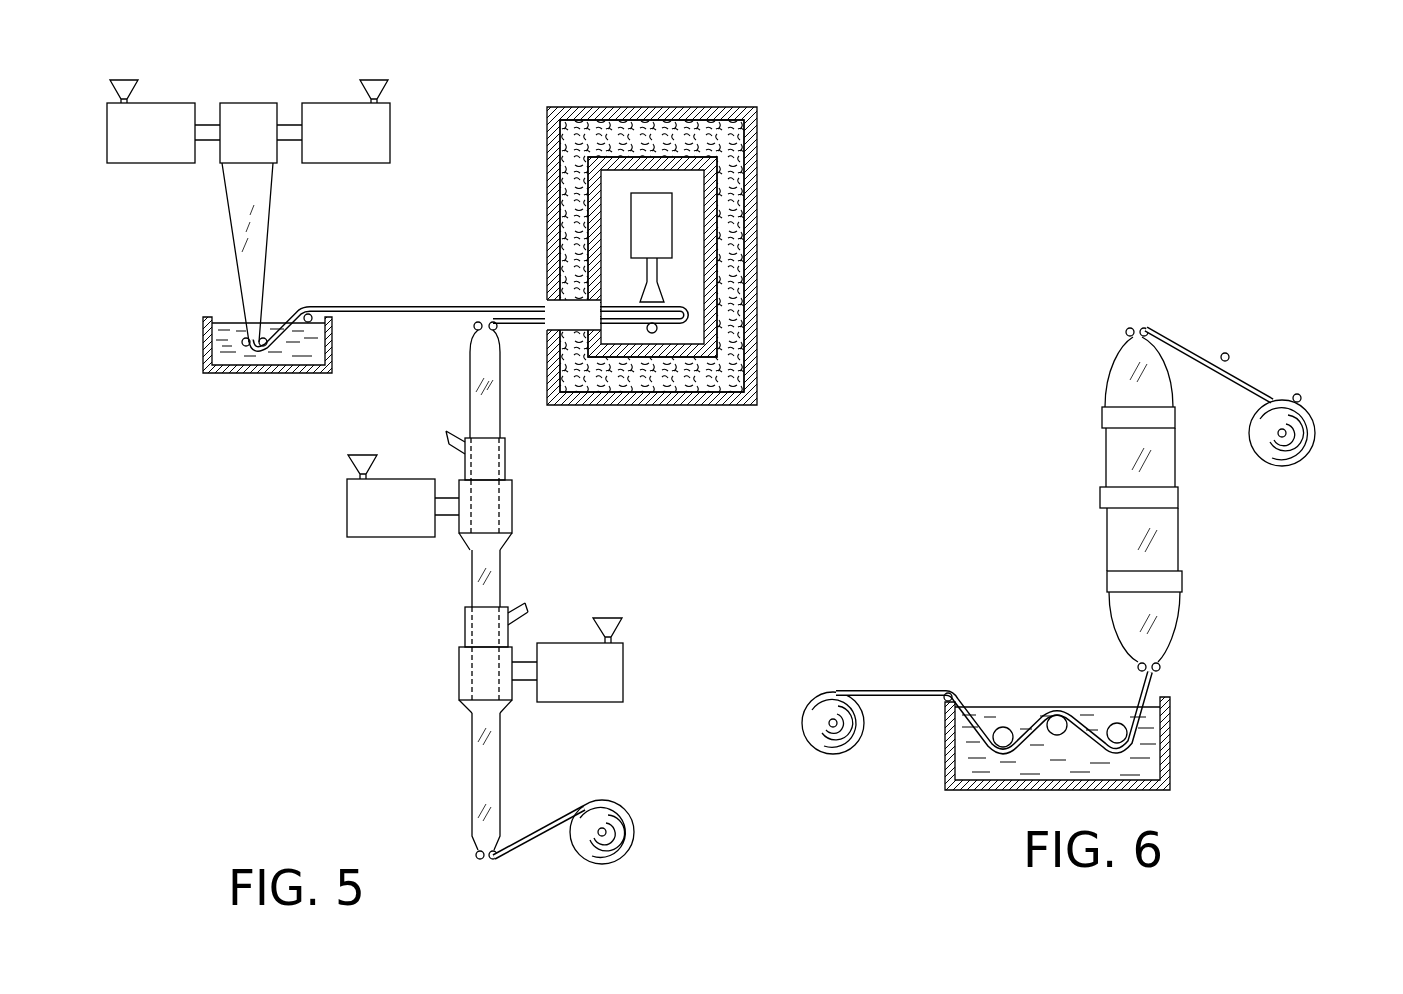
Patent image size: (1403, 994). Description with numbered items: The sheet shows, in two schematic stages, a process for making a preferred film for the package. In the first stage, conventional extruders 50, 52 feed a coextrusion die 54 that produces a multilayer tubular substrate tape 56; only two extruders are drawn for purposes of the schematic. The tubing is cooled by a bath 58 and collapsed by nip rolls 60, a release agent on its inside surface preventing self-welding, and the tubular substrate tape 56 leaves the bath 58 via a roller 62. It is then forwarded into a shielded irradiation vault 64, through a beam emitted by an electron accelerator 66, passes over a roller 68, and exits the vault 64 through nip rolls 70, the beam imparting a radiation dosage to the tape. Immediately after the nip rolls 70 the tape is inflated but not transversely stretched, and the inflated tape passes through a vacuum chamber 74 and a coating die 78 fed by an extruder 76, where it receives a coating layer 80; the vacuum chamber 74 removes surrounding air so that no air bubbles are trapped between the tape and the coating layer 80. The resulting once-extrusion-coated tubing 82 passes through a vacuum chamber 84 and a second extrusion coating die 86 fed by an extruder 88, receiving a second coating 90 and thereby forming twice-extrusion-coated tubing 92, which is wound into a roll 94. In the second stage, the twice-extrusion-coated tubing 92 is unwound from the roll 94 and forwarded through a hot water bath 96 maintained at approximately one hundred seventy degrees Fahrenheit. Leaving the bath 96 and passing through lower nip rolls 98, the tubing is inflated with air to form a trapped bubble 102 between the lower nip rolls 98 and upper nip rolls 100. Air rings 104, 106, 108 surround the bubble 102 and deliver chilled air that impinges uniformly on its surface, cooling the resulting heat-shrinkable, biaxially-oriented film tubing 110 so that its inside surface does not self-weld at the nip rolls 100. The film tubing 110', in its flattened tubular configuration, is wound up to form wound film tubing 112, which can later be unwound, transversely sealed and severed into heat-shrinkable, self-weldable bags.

In FIG. 5, the extruder 50 is at (157, 116).
In FIG. 5, the extruder 52 is at (373, 133).
In FIG. 5, the coextrusion die 54 is at (250, 118).
In FIG. 5, the tubular substrate tape 56 is at (272, 232).
In FIG. 5, the bath 58 is at (203, 349).
In FIG. 5, the nip rolls 60 is at (237, 334).
In FIG. 5, the roller 62 is at (332, 318).
In FIG. 5, the shielded irradiation vault 64 is at (757, 184).
In FIG. 5, the electron accelerator 66 is at (651, 247).
In FIG. 5, the roller 68 is at (682, 310).
In FIG. 5, the nip rolls 70 is at (476, 330).
In FIG. 5, the vacuum chamber 74 is at (505, 462).
In FIG. 5, the extruder 76 is at (390, 515).
In FIG. 5, the coating die 78 is at (512, 508).
In FIG. 5, the coating layer 80 is at (512, 545).
In FIG. 5, the once-extrusion-coated tubing 82 is at (502, 588).
In FIG. 5, the vacuum chamber 84 is at (465, 622).
In FIG. 5, the second extrusion coating die 86 is at (459, 672).
In FIG. 5, the extruder 88 is at (605, 673).
In FIG. 5, the second coating 90 is at (504, 703).
In FIG. 5, the twice-extrusion-coated tubing 92 is at (470, 790).
In FIG. 6, the twice-extrusion-coated tubing 92 is at (905, 688).
In FIG. 5, the roll 94 is at (633, 822).
In FIG. 6, the roll 94 is at (824, 752).
In FIG. 6, the hot water bath 96 is at (1170, 730).
In FIG. 6, the lower nip rolls 98 is at (1162, 667).
In FIG. 6, the upper nip rolls 100 is at (1126, 331).
In FIG. 6, the trapped bubble 102 is at (1180, 617).
In FIG. 6, the air ring 104 is at (1182, 580).
In FIG. 6, the air ring 106 is at (1178, 492).
In FIG. 6, the air ring 108 is at (1177, 422).
In FIG. 6, the biaxially-oriented film tubing 110 is at (1090, 454).
In FIG. 6, the film tubing 110' is at (1223, 330).
In FIG. 6, the wound film tubing 112 is at (1316, 440).